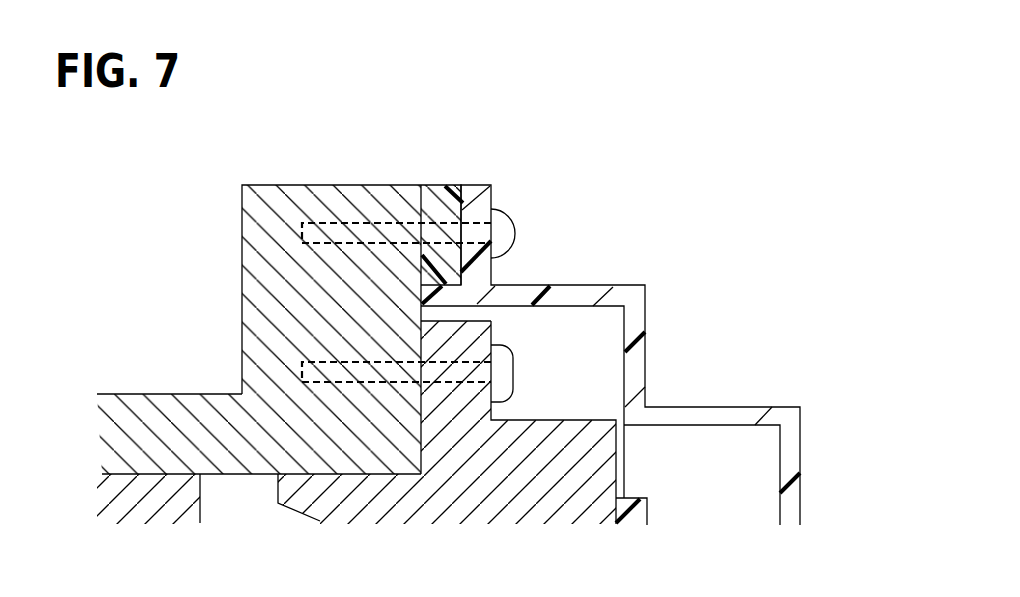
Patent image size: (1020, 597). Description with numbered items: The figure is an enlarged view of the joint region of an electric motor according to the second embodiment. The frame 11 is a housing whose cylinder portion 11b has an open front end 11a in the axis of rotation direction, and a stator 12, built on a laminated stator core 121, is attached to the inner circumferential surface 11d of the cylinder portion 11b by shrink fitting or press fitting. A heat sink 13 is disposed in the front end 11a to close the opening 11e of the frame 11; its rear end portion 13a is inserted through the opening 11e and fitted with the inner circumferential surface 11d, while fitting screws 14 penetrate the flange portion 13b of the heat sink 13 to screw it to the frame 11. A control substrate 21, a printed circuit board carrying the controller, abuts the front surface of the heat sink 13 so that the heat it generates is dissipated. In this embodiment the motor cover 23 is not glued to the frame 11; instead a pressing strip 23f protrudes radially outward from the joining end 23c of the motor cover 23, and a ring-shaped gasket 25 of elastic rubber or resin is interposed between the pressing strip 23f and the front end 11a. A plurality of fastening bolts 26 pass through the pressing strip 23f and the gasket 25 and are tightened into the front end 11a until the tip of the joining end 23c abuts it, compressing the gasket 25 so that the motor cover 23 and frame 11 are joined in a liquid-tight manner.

The frame 11 is at (135, 434).
The front end 11a is at (423, 440).
The cylinder portion 11b is at (153, 405).
The inner circumferential surface 11d is at (265, 478).
The opening 11e is at (373, 476).
The stator 12 is at (137, 512).
The stator core 121 is at (167, 507).
The heat sink 13 is at (563, 507).
The rear end portion 13a is at (322, 505).
The flange portion 13b is at (468, 337).
The fitting screw 14 is at (500, 378).
The control substrate 21 is at (625, 516).
The motor cover 23 is at (793, 457).
The joining end 23c is at (428, 291).
The pressing strip 23f is at (473, 213).
The gasket 25 is at (440, 200).
The fastening bolt 26 is at (510, 233).